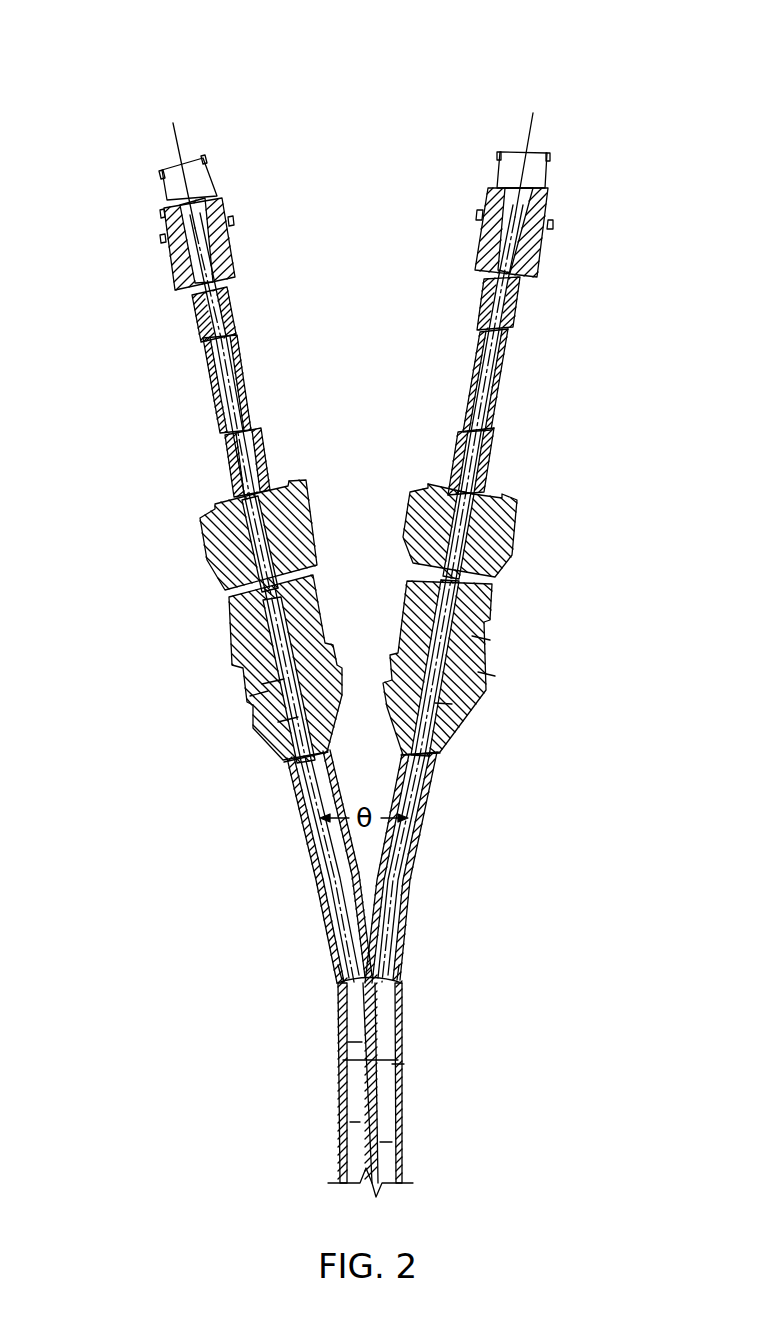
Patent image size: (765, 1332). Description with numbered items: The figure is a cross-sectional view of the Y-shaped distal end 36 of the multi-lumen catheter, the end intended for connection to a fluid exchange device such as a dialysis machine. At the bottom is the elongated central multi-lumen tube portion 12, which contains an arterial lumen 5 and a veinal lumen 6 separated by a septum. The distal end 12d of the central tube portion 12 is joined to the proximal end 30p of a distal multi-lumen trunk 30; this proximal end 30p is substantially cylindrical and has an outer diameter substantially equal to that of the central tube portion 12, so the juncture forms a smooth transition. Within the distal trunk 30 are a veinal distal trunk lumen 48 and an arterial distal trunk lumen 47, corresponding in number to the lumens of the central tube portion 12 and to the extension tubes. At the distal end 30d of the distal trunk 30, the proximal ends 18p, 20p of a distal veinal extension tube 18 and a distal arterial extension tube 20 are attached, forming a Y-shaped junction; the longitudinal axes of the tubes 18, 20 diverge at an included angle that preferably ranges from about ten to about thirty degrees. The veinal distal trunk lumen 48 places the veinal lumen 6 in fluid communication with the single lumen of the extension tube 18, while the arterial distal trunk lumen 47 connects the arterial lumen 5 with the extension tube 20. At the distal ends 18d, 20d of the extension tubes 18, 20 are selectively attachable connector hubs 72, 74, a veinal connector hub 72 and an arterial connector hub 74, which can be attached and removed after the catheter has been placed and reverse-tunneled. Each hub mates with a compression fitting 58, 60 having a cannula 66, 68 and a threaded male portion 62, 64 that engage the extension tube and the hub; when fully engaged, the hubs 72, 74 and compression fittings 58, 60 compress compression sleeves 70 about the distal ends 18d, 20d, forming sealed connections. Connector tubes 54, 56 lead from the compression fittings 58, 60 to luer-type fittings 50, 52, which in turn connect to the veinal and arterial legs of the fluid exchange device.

The distal end 36 is at (362, 88).
The luer-type fitting 50 is at (543, 253).
The luer-type fitting 52 is at (170, 256).
The connector tube 54 is at (506, 378).
The connector tube 56 is at (208, 392).
The compression fitting 58 is at (518, 536).
The compression fitting 60 is at (210, 545).
The threaded male portion 62 is at (468, 614).
The threaded male portion 64 is at (262, 648).
The veinal connector hub 72 is at (482, 638).
The distal end of distal veinal extension tube 18d is at (487, 674).
The distal end of distal arterial extension tube 20d is at (270, 680).
The compression sleeve 70 is at (285, 720).
The arterial connector hub 74 is at (257, 690).
The cannula 66 is at (443, 757).
The cannula 68 is at (292, 760).
The distal veinal extension tube 18 is at (423, 815).
The distal arterial extension tube 20 is at (310, 835).
The proximal end of distal veinal extension tube 18p is at (401, 970).
The proximal end of distal arterial extension tube 20p is at (337, 970).
The distal multi-lumen trunk 30 is at (398, 1034).
The distal end of distal trunk 30d is at (344, 983).
The proximal end of distal trunk 30p is at (394, 1058).
The veinal distal trunk lumen 48 is at (384, 1003).
The arterial distal trunk lumen 47 is at (355, 1045).
The central multi-lumen tube portion 12 is at (341, 1090).
The distal end of central tube portion 12d is at (396, 1066).
The arterial lumen 5 is at (355, 1130).
The veinal lumen 6 is at (384, 1145).